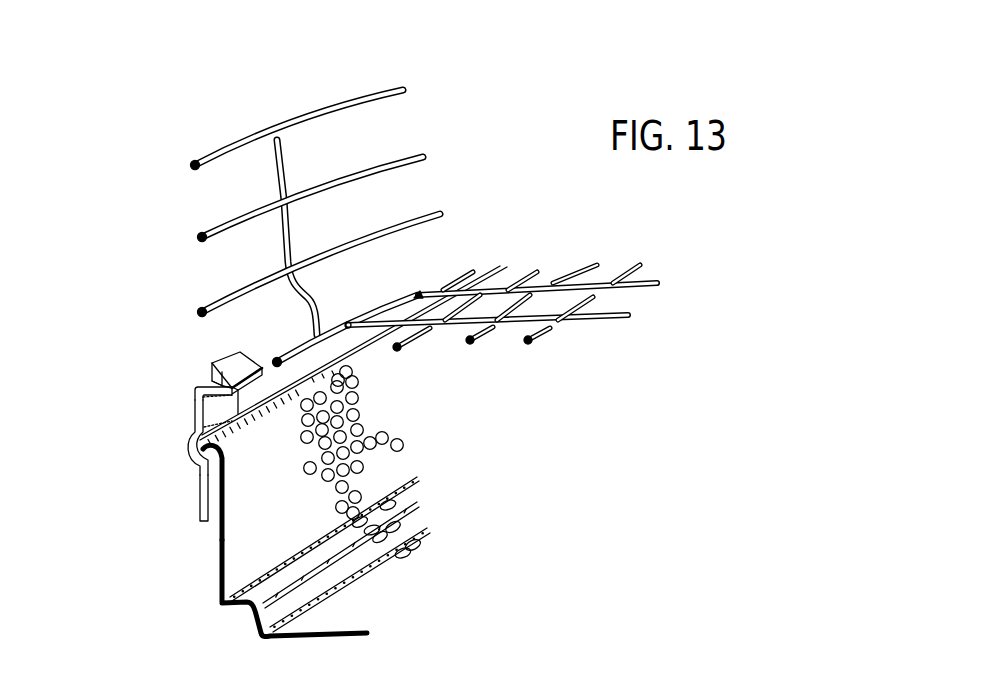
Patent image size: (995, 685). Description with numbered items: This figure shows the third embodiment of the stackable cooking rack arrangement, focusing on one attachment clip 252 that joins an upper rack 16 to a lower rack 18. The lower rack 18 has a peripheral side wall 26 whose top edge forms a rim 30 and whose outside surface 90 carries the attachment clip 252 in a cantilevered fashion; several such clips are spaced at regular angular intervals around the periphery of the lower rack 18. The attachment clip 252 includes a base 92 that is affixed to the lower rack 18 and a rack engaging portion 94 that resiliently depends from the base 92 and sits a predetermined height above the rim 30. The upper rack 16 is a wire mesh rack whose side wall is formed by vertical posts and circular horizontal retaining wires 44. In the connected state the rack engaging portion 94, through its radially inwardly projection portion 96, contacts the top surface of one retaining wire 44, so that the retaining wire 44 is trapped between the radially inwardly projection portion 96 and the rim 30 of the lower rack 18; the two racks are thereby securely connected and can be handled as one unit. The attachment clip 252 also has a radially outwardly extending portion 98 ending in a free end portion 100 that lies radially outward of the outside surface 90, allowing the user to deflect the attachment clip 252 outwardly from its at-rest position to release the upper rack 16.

The upper rack 16 is at (284, 126).
The horizontal retaining wire 44 is at (204, 308).
The radially outwardly extending portion 98 is at (244, 314).
The free end portion 100 is at (213, 363).
The top rim 30 is at (280, 398).
The radially inwardly projection portion 96 is at (212, 386).
The rack engaging portion 94 is at (205, 385).
The attachment clip 252 is at (195, 417).
The base 92 is at (200, 493).
The outside surface 90 is at (218, 530).
The lower rack 18 is at (261, 517).
The peripheral side wall 26 is at (220, 562).